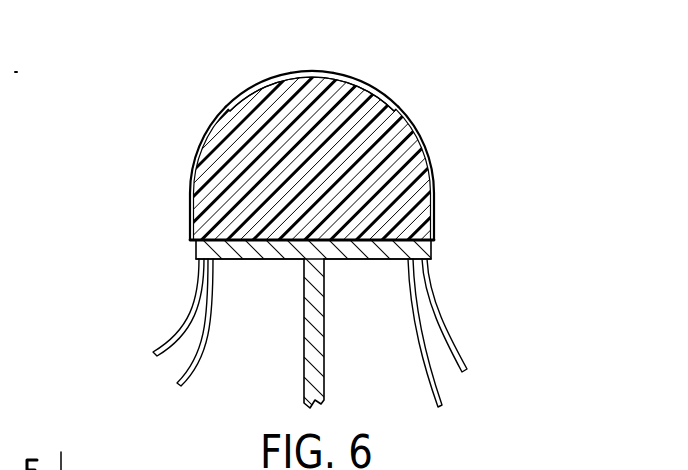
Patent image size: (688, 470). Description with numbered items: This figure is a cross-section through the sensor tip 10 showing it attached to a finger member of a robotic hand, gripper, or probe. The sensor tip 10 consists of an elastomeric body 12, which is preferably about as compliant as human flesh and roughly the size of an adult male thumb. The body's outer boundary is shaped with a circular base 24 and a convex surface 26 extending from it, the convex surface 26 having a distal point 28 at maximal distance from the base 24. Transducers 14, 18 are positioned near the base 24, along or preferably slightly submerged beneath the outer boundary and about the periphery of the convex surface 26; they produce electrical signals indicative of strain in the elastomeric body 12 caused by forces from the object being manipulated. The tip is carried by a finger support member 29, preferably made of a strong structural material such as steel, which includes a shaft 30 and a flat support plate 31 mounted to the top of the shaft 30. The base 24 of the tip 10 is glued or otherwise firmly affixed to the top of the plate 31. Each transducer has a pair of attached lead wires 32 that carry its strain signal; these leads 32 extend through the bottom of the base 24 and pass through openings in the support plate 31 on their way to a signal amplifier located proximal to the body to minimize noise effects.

The sensor tip 10 is at (368, 80).
The elastomeric body 12 is at (382, 100).
The transducer 14 is at (210, 152).
The transducer 18 is at (421, 158).
The circular base 24 is at (197, 250).
The convex surface 26 is at (262, 88).
The distal point 28 is at (313, 70).
The finger support member 29 is at (304, 335).
The shaft 30 is at (324, 330).
The flat support plate 31 is at (272, 261).
The lead wires 32 is at (190, 365).